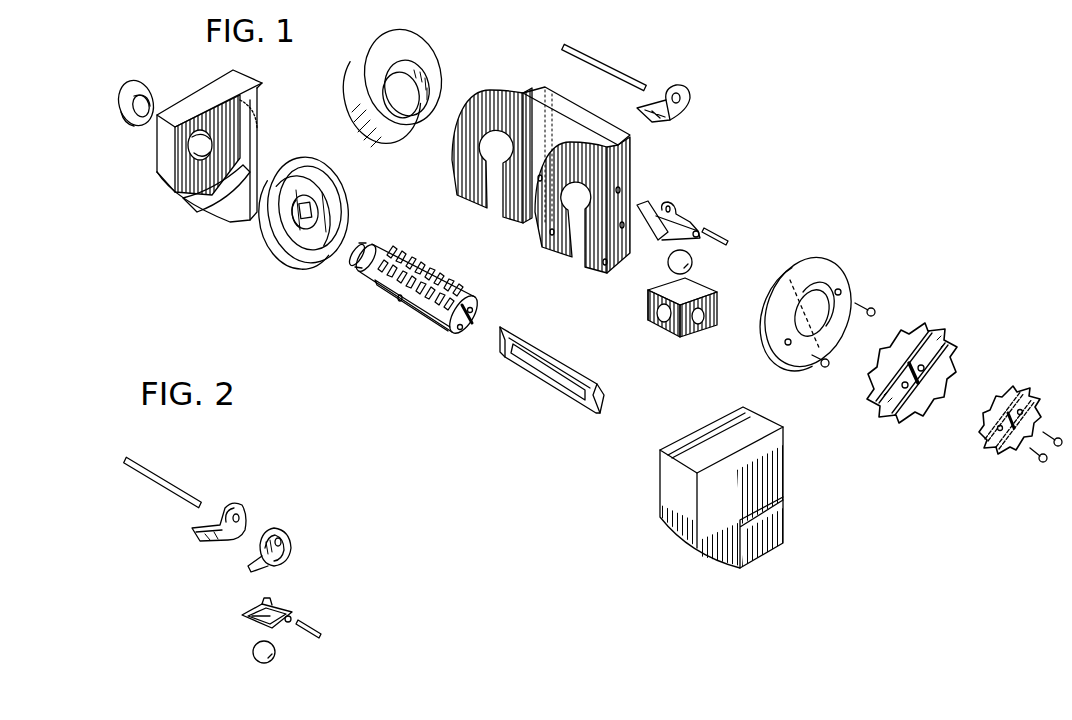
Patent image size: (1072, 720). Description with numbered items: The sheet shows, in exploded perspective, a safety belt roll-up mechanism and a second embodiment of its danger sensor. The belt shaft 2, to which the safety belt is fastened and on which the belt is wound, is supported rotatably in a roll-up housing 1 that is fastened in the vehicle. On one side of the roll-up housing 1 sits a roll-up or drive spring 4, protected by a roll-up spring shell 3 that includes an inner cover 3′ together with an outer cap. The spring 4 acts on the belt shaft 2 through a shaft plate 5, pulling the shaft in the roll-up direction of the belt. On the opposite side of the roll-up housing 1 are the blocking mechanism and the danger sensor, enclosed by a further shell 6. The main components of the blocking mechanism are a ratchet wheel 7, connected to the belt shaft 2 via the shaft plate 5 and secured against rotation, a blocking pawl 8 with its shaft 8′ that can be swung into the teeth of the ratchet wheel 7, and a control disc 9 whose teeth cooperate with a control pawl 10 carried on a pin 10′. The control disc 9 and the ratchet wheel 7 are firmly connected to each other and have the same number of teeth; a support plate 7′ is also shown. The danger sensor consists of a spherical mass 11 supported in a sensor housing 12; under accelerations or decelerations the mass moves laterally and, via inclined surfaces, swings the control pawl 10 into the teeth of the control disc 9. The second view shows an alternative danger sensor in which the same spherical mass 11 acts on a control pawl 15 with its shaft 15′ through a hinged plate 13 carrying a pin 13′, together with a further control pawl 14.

In FIG. 1, the roll-up housing 1 is at (600, 112).
In FIG. 1, the belt shaft 2 is at (398, 300).
In FIG. 1, the roll-up spring shell 3 is at (165, 172).
In FIG. 1, the inner cover 3′ is at (425, 48).
In FIG. 1, the roll-up spring 4 is at (283, 265).
In FIG. 1, the shaft plate 5 is at (545, 383).
In FIG. 1, the cover box 6 is at (790, 503).
In FIG. 1, the ratchet wheel 7 is at (935, 340).
In FIG. 1, the support plate 7′ is at (842, 275).
In FIG. 1, the blocking pawl 8 is at (668, 96).
In FIG. 1, the shaft 8′ is at (618, 70).
In FIG. 1, the control disc 9 is at (1026, 406).
In FIG. 1, the control pawl 10 is at (655, 205).
In FIG. 1, the pin 10′ is at (718, 236).
In FIG. 1, the spherical mass 11 is at (692, 267).
In FIG. 2, the spherical mass 11 is at (276, 657).
In FIG. 1, the sensor housing 12 is at (715, 322).
In FIG. 2, the hinged plate 13 is at (283, 612).
In FIG. 2, the pin 13′ is at (317, 630).
In FIG. 2, the control pawl 14 is at (276, 540).
In FIG. 2, the control pawl 15 is at (226, 510).
In FIG. 2, the shaft 15′ is at (182, 488).